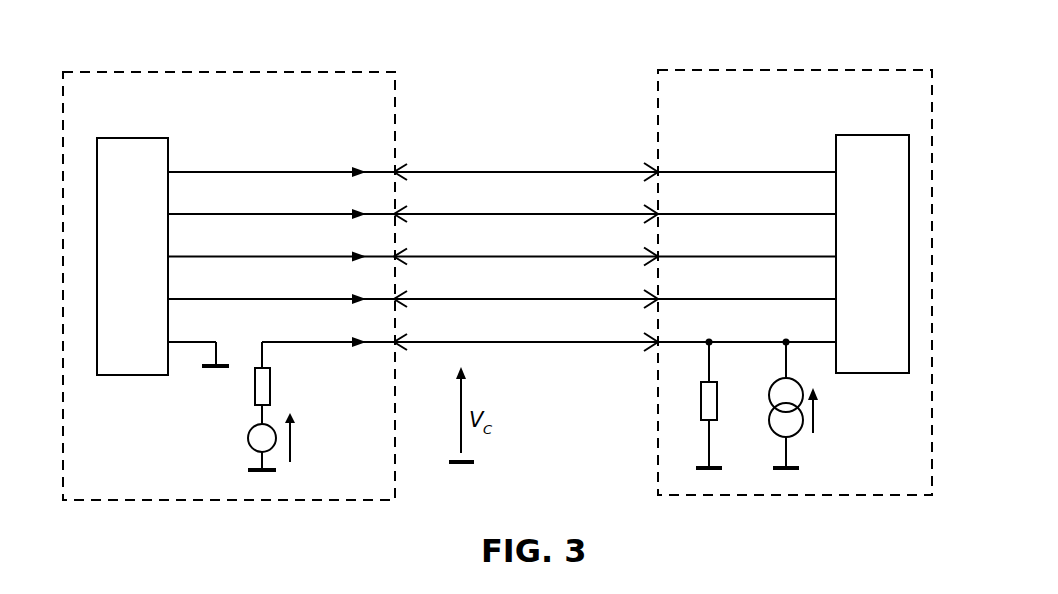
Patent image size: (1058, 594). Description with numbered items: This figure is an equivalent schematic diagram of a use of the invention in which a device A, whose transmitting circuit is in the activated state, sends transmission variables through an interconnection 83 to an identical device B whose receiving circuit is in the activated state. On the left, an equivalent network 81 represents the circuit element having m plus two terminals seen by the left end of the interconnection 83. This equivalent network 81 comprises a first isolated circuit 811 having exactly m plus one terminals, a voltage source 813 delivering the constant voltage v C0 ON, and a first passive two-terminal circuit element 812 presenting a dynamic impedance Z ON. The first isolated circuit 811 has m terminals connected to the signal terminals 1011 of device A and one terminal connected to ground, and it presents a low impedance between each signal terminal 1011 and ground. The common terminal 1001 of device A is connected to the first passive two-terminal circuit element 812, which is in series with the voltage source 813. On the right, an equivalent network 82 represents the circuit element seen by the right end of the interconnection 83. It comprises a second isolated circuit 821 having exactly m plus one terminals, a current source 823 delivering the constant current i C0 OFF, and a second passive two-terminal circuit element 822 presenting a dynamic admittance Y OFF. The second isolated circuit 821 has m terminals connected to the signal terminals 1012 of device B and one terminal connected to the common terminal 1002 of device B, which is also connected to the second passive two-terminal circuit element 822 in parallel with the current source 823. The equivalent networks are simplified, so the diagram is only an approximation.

The equivalent network 81 is at (138, 67).
The first isolated circuit 811 is at (128, 130).
The first passive two-terminal circuit element 812 is at (248, 390).
The voltage source 813 is at (243, 446).
The equivalent network 82 is at (793, 60).
The second isolated circuit 821 is at (877, 128).
The second passive two-terminal circuit element 822 is at (742, 378).
The current source 823 is at (807, 445).
The interconnection 83 is at (528, 115).
The signal terminals 1011 is at (418, 162).
The signal terminals 1012 is at (637, 162).
The common terminal 1001 is at (418, 332).
The common terminal 1002 is at (637, 332).